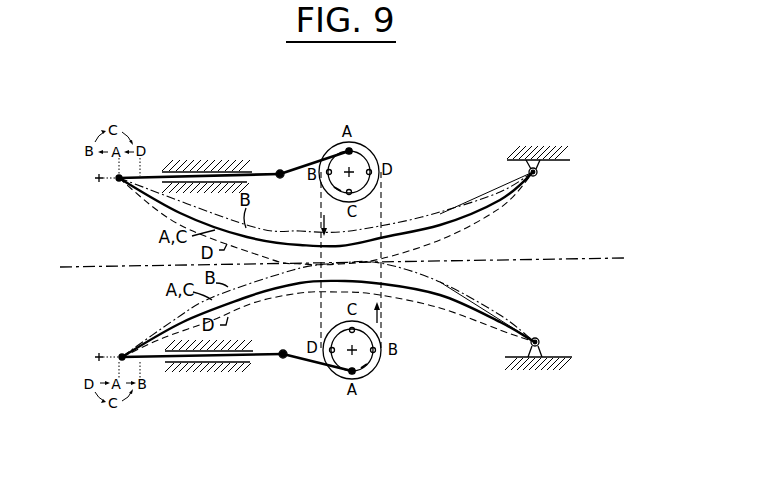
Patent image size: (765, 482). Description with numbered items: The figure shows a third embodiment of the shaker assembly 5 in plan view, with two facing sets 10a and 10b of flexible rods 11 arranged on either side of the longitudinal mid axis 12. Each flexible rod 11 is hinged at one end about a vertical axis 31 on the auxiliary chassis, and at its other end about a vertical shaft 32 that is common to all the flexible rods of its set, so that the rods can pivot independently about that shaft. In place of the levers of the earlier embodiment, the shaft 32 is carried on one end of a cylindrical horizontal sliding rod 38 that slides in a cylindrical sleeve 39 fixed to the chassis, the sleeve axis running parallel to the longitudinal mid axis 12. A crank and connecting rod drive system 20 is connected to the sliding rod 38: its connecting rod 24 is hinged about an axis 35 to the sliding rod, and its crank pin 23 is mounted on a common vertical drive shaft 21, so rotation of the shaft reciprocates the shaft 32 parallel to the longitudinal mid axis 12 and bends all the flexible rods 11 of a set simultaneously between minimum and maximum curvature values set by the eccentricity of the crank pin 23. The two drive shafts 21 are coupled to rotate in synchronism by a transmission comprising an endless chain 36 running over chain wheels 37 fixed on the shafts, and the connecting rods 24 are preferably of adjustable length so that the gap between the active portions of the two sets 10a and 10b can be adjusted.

The shaker assembly 5 is at (99, 246).
The first set of flexible rods 10a is at (460, 174).
The second set of flexible rods 10b is at (440, 328).
The flexible rod 11 is at (478, 222).
The longitudinal mid axis 12 is at (608, 257).
The crank and connecting rod drive system 20 is at (361, 129).
The common vertical drive shaft 21 is at (354, 175).
The crank pin 23 is at (369, 148).
The connecting rod 24 is at (286, 178).
The vertical axis 31 is at (544, 176).
The vertical shaft 32 is at (115, 183).
The hinge axis 35 is at (280, 170).
The endless chain 36 is at (320, 204).
The chain wheel 37 is at (334, 146).
The sliding rod 38 is at (163, 171).
The cylindrical sleeve 39 is at (218, 165).